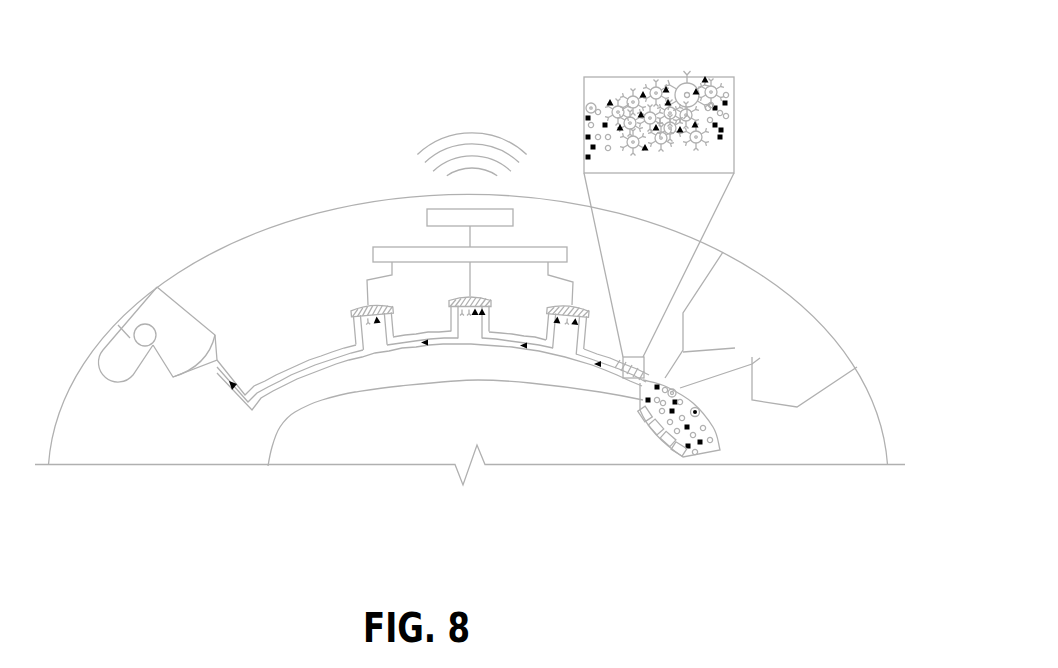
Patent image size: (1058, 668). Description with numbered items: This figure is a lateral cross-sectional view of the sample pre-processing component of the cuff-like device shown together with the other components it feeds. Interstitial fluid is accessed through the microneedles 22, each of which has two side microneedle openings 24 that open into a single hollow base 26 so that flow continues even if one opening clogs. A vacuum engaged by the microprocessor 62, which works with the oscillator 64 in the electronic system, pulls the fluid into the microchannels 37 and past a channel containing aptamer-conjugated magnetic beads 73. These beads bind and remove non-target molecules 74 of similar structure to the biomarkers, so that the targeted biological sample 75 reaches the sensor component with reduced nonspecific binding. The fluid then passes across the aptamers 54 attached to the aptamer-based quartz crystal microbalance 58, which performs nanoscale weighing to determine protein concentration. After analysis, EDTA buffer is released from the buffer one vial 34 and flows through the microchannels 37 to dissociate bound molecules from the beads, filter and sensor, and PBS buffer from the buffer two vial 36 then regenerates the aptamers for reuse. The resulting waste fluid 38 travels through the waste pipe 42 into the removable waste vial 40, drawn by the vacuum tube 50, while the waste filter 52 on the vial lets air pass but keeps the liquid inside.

The microneedles 22 is at (662, 430).
The microneedle openings 24 is at (637, 430).
The hollow base 26 is at (697, 453).
The buffer one vial 34 is at (737, 285).
The buffer two vial 36 is at (820, 353).
The microchannels 37 is at (592, 345).
The waste fluid 38 is at (197, 367).
The waste vial 40 is at (181, 333).
The waste pipe 42 is at (280, 378).
The vacuum tube 50 is at (120, 367).
The waste filter 52 is at (146, 324).
The aptamers 54 is at (372, 316).
The aptamer-based quartz crystal microbalance 58 is at (577, 305).
The microprocessor 62 is at (427, 217).
The oscillator 64 is at (373, 255).
The aptamer-conjugated magnetic beads 73 is at (688, 83).
The non-target molecules 74 is at (592, 103).
The targeted biological sample 75 is at (690, 144).